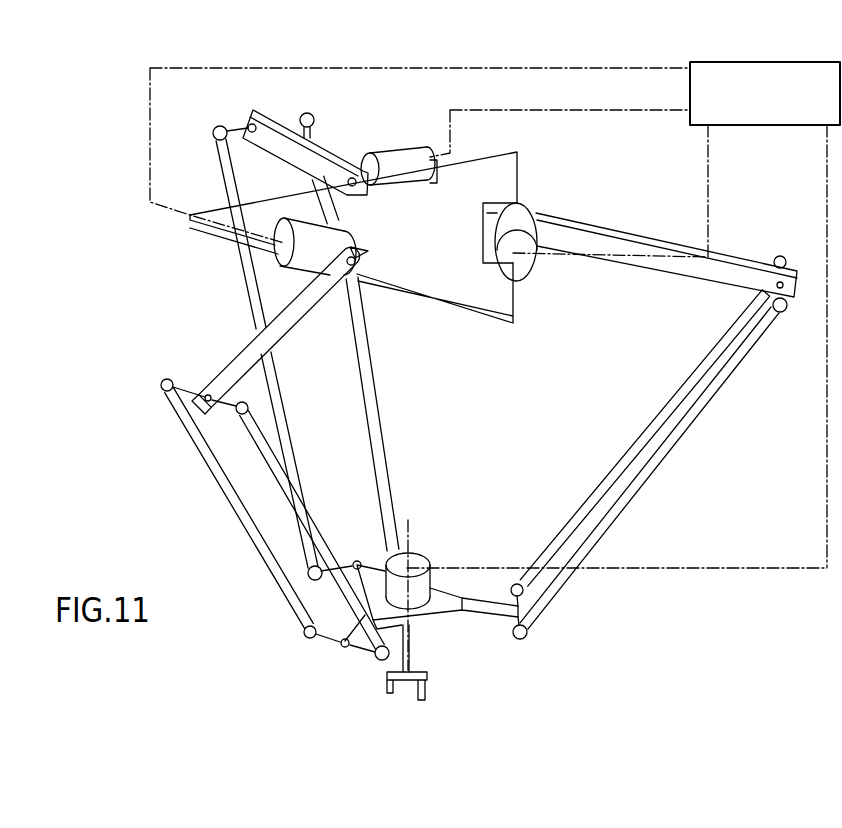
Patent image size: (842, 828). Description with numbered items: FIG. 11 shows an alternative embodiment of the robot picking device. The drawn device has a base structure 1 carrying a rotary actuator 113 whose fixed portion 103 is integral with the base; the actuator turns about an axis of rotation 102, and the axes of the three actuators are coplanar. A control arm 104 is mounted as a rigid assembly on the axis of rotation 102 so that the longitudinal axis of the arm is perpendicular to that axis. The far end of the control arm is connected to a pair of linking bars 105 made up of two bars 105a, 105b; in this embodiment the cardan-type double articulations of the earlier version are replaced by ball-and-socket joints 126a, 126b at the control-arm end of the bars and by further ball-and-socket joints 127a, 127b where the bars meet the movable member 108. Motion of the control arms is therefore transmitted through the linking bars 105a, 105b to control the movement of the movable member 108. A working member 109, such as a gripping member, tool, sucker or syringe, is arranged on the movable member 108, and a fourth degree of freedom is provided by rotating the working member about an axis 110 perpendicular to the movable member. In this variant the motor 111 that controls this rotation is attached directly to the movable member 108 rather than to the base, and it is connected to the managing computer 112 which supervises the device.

The base plate 1 is at (503, 174).
The axis of rotation 102 is at (353, 266).
The fixed portion 103 is at (293, 253).
The arm 104 is at (240, 367).
The parallel link 105 is at (654, 426).
The linking bar 105a is at (680, 437).
The linking bar 105b is at (652, 420).
The movable member 108 is at (440, 615).
The working member 109 is at (423, 683).
The axis 110 is at (408, 532).
The motor 111 is at (420, 552).
The controller 112 is at (786, 106).
The rotary actuator 113 is at (373, 138).
The ball-and-socket joint 126a is at (163, 390).
The ball-and-socket joint 126b is at (203, 462).
The ball-and-socket joint 127a is at (304, 637).
The ball-and-socket joint 127b is at (378, 660).